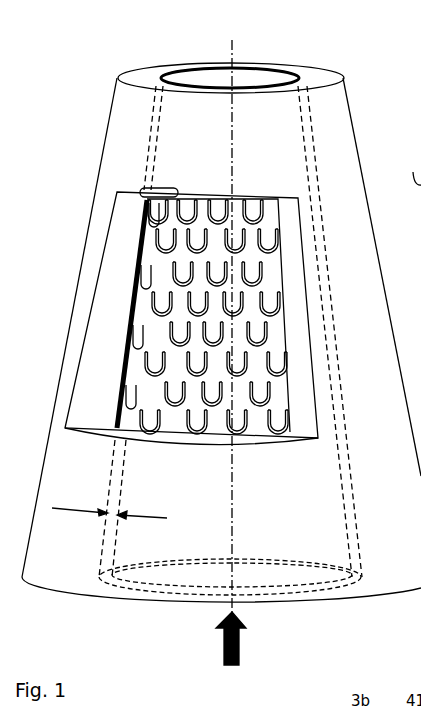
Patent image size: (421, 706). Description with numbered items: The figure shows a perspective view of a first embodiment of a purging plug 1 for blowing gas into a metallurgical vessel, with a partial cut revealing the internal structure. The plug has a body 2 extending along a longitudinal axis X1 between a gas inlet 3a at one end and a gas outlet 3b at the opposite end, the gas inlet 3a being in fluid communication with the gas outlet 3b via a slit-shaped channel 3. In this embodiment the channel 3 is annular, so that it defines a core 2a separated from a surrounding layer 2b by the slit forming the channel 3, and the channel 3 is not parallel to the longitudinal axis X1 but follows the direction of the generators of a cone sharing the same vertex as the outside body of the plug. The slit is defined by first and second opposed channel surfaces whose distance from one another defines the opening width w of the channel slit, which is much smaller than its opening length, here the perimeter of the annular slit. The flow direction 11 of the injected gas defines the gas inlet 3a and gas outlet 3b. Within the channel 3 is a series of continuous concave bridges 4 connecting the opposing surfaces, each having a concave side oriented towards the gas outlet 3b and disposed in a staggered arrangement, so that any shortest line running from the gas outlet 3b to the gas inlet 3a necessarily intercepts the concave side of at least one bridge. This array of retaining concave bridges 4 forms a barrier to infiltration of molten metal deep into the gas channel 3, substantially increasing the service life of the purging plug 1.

The purging plug 1 is at (381, 92).
The body 2 is at (356, 150).
The core 2a is at (207, 73).
The surrounding layer 2b is at (134, 71).
The gas flow channel 3 is at (135, 290).
The gas inlet 3a is at (325, 591).
The gas outlet 3b is at (292, 65).
The concave bridges 4 is at (138, 330).
The flow direction 11 is at (242, 640).
The longitudinal axis X1 is at (232, 314).
The opening width w is at (109, 506).